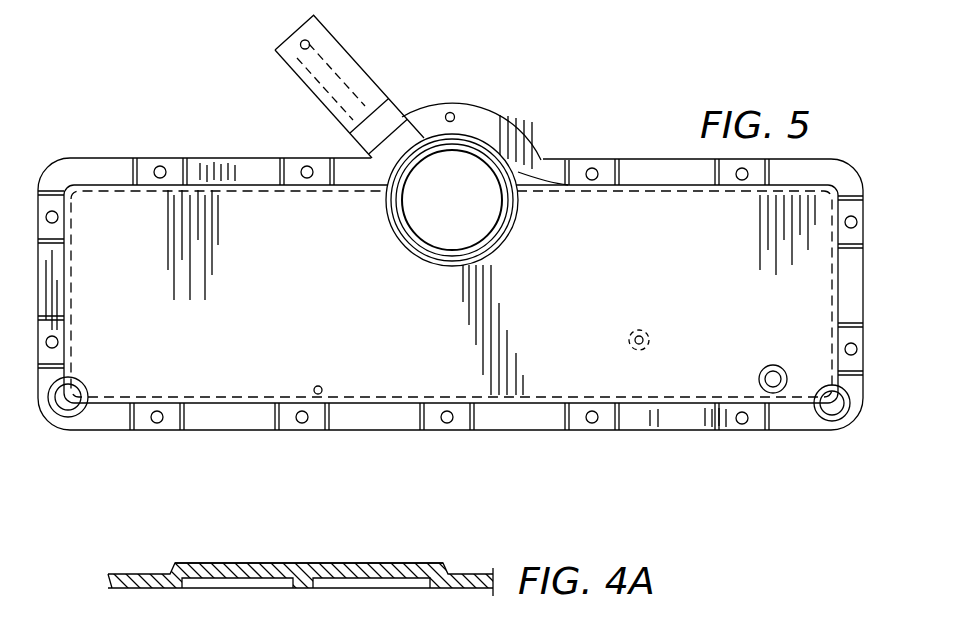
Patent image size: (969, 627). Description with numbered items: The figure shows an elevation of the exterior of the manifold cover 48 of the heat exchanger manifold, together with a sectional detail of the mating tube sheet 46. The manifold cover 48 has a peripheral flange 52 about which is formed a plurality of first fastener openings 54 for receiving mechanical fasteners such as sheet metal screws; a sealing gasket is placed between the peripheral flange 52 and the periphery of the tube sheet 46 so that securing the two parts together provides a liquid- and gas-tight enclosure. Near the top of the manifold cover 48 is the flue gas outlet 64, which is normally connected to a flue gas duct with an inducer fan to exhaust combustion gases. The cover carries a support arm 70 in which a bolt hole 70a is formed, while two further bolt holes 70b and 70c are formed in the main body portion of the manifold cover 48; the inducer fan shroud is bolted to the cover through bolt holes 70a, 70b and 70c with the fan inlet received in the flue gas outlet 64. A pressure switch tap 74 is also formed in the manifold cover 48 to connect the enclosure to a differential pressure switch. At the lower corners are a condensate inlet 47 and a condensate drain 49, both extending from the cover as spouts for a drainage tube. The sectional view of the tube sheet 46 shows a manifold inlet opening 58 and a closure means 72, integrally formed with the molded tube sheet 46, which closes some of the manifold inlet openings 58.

In FIG. 5, the manifold cover 48 is at (233, 148).
In FIG. 5, the peripheral flange 52 is at (552, 166).
In FIG. 5, the first fastener openings 54 is at (454, 113).
In FIG. 5, the flue gas outlet 64 is at (466, 215).
In FIG. 5, the support arm 70 is at (348, 84).
In FIG. 5, the bolt hole 70a is at (309, 44).
In FIG. 5, the bolt hole 70b is at (646, 339).
In FIG. 5, the bolt hole 70c is at (320, 386).
In FIG. 5, the pressure switch tap 74 is at (771, 366).
In FIG. 5, the condensate drain 49 is at (86, 383).
In FIG. 5, the condensate inlet 47 is at (835, 424).
In FIG. 4A, the tube sheet 46 is at (318, 556).
In FIG. 4A, the closure means 72 is at (248, 562).
In FIG. 4A, the manifold inlet openings 58 is at (254, 590).